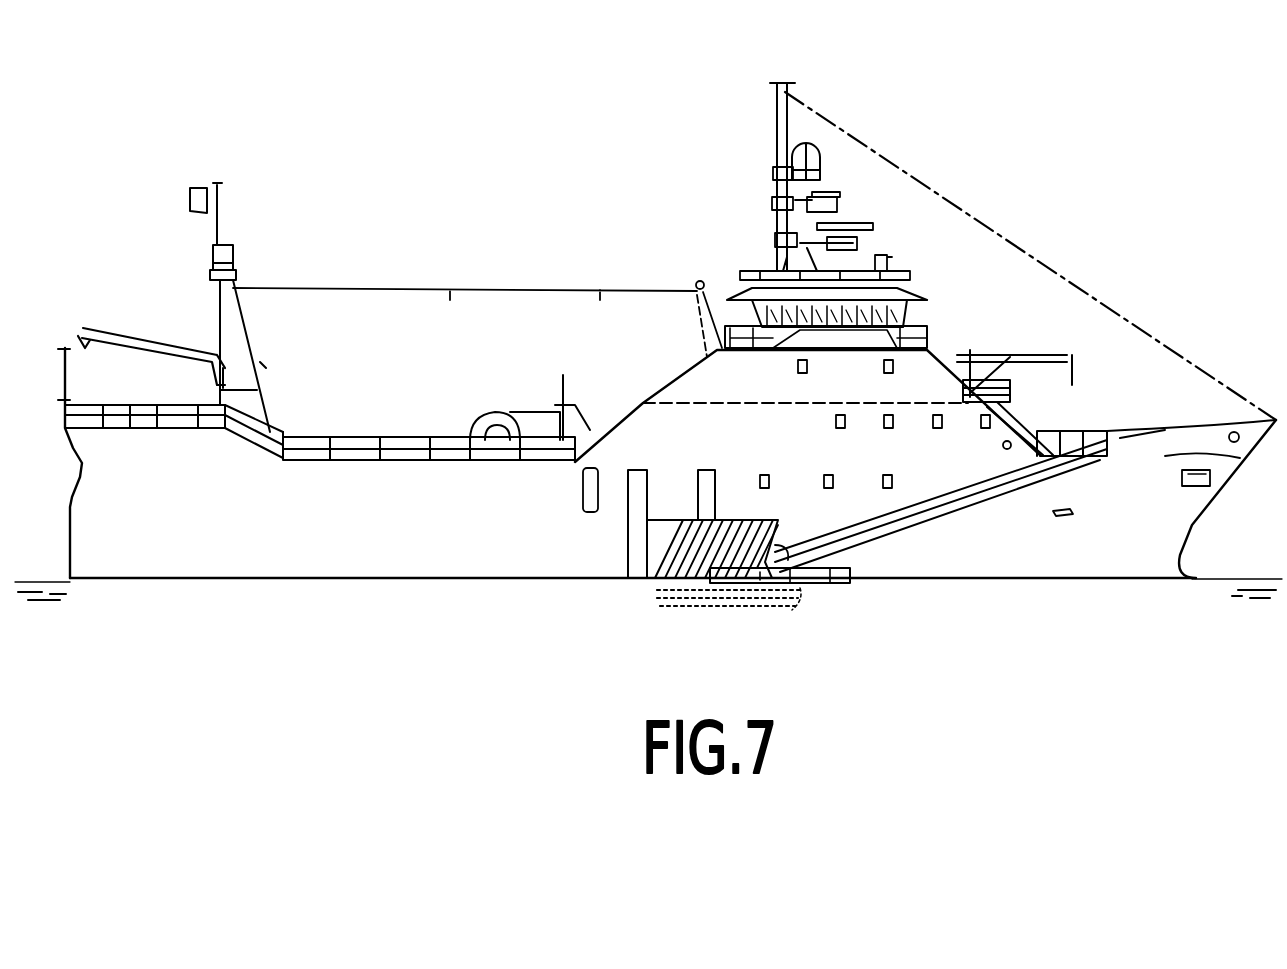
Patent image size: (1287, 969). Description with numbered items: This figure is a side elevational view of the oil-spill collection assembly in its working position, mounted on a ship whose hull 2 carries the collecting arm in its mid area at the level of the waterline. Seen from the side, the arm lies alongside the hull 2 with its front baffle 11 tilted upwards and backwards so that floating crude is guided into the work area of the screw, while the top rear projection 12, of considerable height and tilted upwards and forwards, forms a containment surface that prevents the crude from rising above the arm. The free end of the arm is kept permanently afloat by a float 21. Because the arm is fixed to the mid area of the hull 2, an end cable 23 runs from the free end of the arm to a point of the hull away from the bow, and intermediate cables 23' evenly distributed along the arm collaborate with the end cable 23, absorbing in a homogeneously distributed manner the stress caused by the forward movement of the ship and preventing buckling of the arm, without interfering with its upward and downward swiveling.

The hull 2 is at (297, 537).
The front baffle 11 is at (800, 610).
The top rear projection 12 is at (652, 582).
The float 21 is at (853, 585).
The cable 23 is at (941, 574).
The intermediate cable 23' is at (941, 580).